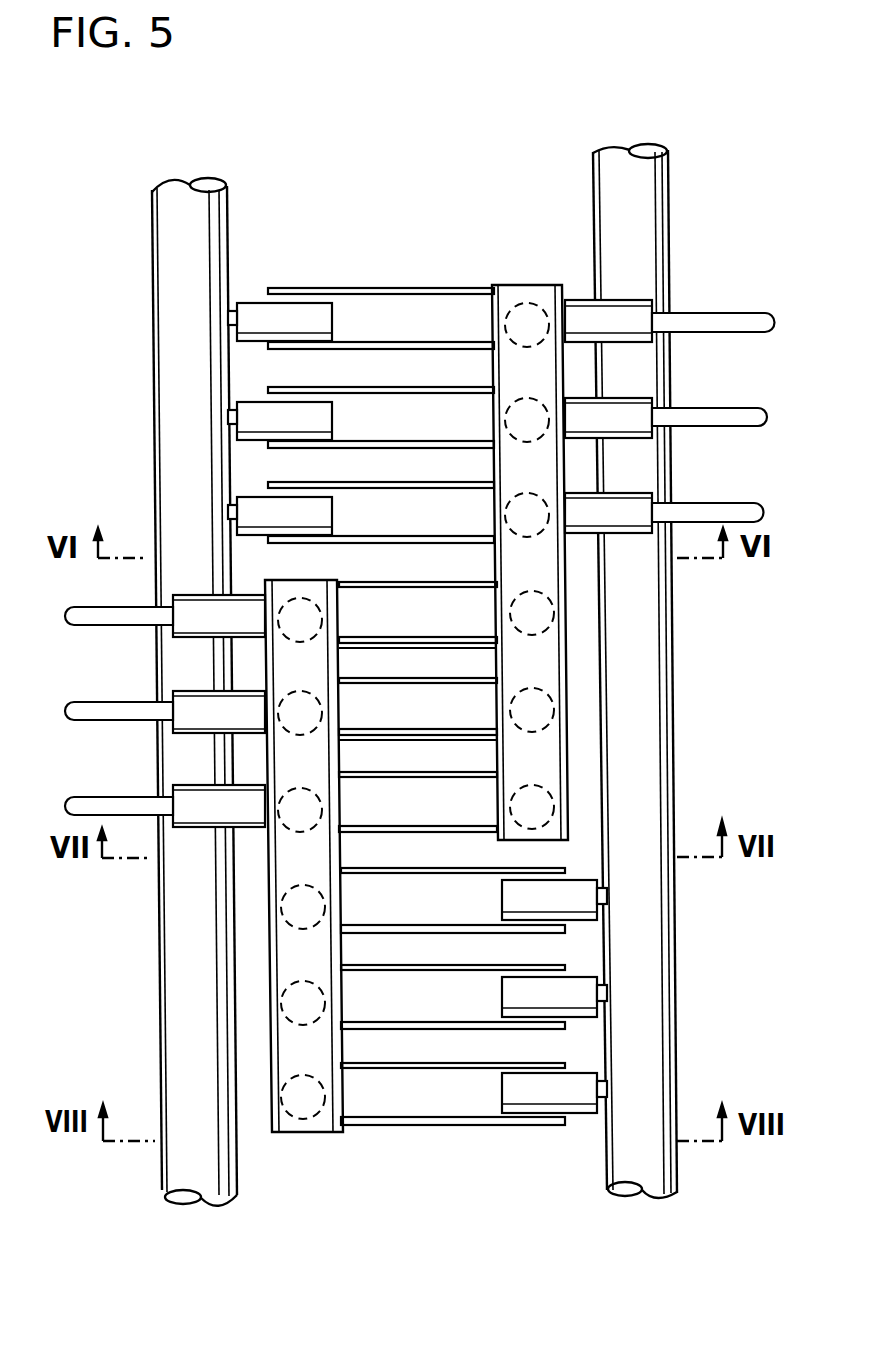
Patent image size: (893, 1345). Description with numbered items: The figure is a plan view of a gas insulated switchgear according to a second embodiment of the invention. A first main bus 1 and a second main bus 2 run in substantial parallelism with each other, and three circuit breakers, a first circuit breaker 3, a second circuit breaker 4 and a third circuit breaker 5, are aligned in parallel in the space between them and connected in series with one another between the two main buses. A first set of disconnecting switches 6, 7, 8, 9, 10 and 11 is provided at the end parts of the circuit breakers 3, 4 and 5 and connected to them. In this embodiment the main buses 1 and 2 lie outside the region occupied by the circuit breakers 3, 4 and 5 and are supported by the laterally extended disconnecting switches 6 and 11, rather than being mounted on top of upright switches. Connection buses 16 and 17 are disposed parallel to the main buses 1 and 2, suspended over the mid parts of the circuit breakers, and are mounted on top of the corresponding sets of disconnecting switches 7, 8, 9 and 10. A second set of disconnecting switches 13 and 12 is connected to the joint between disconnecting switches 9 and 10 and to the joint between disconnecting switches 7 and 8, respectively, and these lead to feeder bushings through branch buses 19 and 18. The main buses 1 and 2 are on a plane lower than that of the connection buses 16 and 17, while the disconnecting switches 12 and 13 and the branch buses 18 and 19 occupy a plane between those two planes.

The first main bus 1 is at (668, 188).
The second main bus 2 is at (152, 210).
The first circuit breaker 3 is at (436, 912).
The second circuit breaker 4 is at (487, 632).
The third circuit breaker 5 is at (430, 288).
The disconnecting switch 6 is at (562, 903).
The disconnecting switch 7 is at (285, 932).
The disconnecting switch 8 is at (268, 578).
The disconnecting switch 9 is at (555, 610).
The disconnecting switch 10 is at (532, 303).
The disconnecting switch 11 is at (250, 302).
The disconnecting switch 12 is at (185, 595).
The disconnecting switch 13 is at (582, 300).
The connection bus 16 is at (497, 285).
The connection bus 17 is at (322, 1133).
The branch bus 18 is at (745, 313).
The branch bus 19 is at (70, 627).